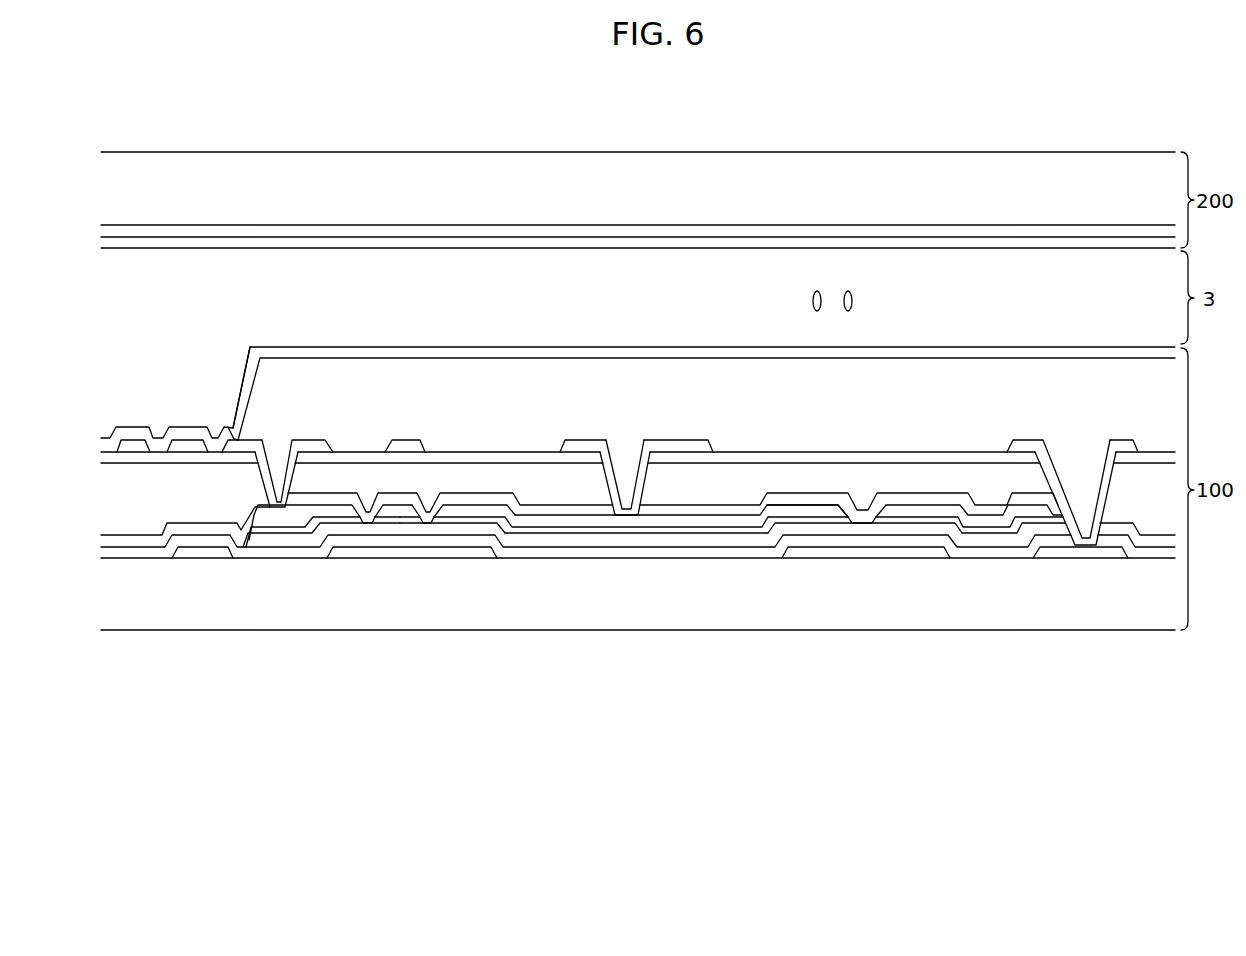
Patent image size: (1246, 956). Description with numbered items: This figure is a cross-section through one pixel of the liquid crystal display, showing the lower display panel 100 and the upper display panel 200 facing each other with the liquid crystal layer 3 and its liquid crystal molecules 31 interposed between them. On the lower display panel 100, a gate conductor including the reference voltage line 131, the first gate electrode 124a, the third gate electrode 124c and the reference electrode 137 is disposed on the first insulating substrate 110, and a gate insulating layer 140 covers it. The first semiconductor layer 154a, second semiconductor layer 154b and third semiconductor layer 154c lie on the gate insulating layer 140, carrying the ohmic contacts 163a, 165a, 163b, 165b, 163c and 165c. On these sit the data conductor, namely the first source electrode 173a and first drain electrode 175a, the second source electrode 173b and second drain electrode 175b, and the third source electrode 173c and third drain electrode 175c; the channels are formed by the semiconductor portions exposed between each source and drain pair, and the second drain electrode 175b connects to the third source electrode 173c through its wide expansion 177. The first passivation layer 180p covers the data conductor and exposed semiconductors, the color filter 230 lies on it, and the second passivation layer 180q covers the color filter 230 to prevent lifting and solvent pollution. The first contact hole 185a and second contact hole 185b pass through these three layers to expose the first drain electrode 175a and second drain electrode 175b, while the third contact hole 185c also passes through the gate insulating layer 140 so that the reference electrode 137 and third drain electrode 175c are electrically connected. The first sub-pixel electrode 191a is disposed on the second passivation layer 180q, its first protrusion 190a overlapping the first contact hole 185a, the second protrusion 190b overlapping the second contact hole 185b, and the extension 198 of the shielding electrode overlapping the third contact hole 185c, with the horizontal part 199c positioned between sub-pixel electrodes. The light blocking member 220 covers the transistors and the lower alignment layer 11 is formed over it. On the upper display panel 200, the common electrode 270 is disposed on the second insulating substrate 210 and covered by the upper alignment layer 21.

The upper display panel 200 is at (647, 173).
The second insulating substrate 210 is at (443, 162).
The common electrode 270 is at (566, 231).
The upper alignment layer 21 is at (683, 244).
The liquid crystal layer 3 is at (1003, 297).
The liquid crystal molecule 31 is at (853, 300).
The lower display panel 100 is at (645, 499).
The lower alignment layer 11 is at (627, 346).
The light blocking member 220 is at (722, 387).
The first protrusion 190a is at (231, 425).
The first sub-pixel electrode 191a is at (133, 437).
The second passivation layer 180q is at (1155, 456).
The color filter 230 is at (982, 476).
The first contact hole 185a is at (273, 485).
The second contact hole 185b is at (610, 476).
The third contact hole 185c is at (1043, 474).
The second protrusion 190b is at (577, 438).
The extension 198 is at (1118, 439).
The horizontal part 199c is at (387, 438).
The first passivation layer 180p is at (148, 541).
The first drain electrode 175a is at (287, 520).
The first source electrode 173a is at (372, 500).
The second source electrode 173b is at (406, 512).
The second drain electrode 175b is at (461, 512).
The expansion 177 is at (683, 522).
The third source electrode 173c is at (803, 510).
The third drain electrode 175c is at (911, 510).
The ohmic contact 165a is at (262, 530).
The ohmic contact 163a is at (383, 527).
The ohmic contact 163b is at (410, 527).
The ohmic contact 165b is at (470, 527).
The ohmic contact 163c is at (822, 520).
The ohmic contact 165c is at (927, 520).
The first semiconductor layer 154a is at (340, 533).
The second semiconductor layer 154b is at (445, 535).
The third semiconductor layer 154c is at (890, 530).
The gate insulating layer 140 is at (617, 553).
The reference voltage line 131 is at (205, 557).
The first gate electrode 124a is at (363, 550).
The third gate electrode 124c is at (843, 555).
The reference electrode 137 is at (1080, 557).
The first insulating substrate 110 is at (737, 608).